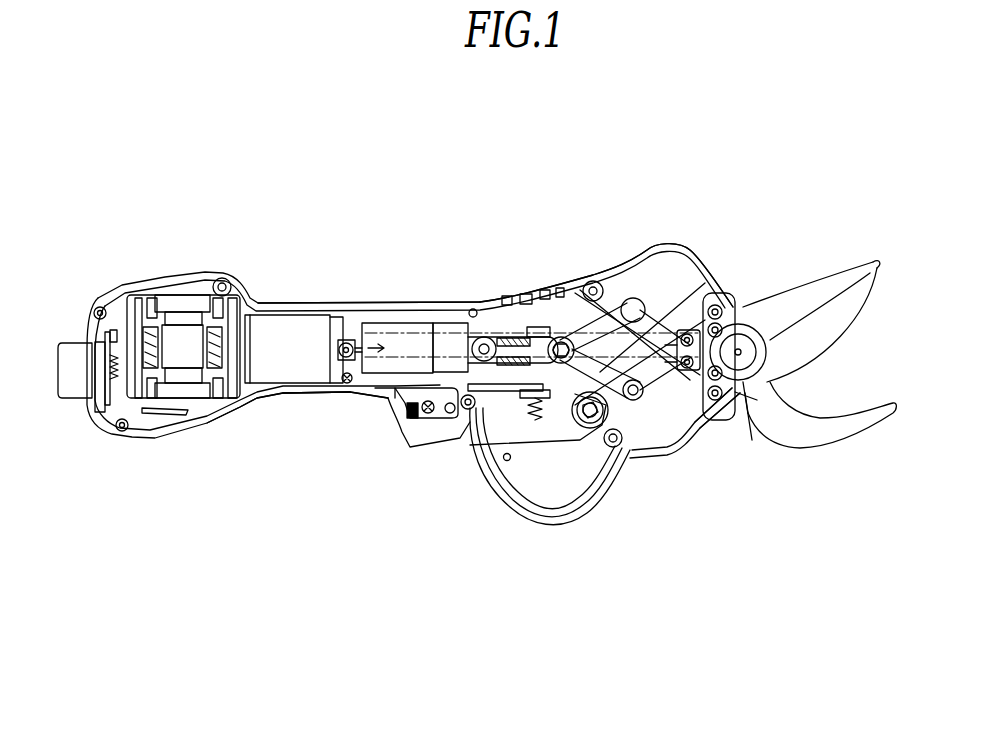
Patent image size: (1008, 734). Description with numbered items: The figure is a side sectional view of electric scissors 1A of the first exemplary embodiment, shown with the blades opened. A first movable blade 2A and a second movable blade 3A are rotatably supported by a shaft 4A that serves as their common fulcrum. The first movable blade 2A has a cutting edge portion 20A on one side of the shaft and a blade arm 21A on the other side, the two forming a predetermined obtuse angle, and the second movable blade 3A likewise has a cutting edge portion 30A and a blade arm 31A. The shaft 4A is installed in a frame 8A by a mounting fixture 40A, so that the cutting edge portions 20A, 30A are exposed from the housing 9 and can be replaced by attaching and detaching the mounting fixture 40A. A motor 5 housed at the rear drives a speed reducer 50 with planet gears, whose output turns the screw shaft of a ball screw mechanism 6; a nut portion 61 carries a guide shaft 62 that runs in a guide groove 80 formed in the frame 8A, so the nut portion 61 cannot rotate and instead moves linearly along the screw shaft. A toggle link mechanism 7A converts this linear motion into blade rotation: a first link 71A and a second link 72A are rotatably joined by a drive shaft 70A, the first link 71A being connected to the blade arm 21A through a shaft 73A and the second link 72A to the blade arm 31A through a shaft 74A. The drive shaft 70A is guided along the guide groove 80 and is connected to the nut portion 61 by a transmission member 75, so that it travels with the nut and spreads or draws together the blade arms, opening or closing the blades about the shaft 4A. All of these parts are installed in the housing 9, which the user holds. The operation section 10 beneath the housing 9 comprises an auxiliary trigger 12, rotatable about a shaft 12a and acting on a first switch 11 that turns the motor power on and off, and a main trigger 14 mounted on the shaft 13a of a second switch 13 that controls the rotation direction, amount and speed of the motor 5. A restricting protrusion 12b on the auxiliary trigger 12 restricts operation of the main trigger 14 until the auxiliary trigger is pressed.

The electric scissors 1A is at (151, 256).
The first movable blade 2A is at (826, 264).
The second movable blade 3A is at (824, 472).
The shaft 4A is at (742, 362).
The motor 5 is at (182, 386).
The ball screw mechanism 6 is at (393, 303).
The toggle link mechanism 7A is at (626, 275).
The frame 8A is at (368, 400).
The housing 9 is at (303, 395).
The operation section 10 is at (543, 480).
The first switch 11 is at (447, 420).
The auxiliary trigger 12 is at (417, 443).
The shaft 12a is at (455, 420).
The restricting protrusion 12b is at (467, 410).
The second switch 13 is at (603, 470).
The shaft 13a is at (583, 430).
The main trigger 14 is at (513, 527).
The cutting edge portion 20A is at (858, 292).
The blade arm 21A is at (697, 283).
The cutting edge portion 30A is at (858, 422).
The blade arm 31A is at (695, 422).
The mounting fixture 40A is at (764, 312).
The speed reducer 50 is at (275, 318).
The nut portion 61 is at (413, 320).
The guide shaft 62 is at (485, 337).
The drive shaft 70A is at (565, 337).
The first link 71A is at (596, 284).
The second link 72A is at (620, 448).
The shaft 73A is at (636, 298).
The shaft 74A is at (633, 402).
The transmission member 75 is at (520, 345).
The guide groove 80 is at (650, 320).